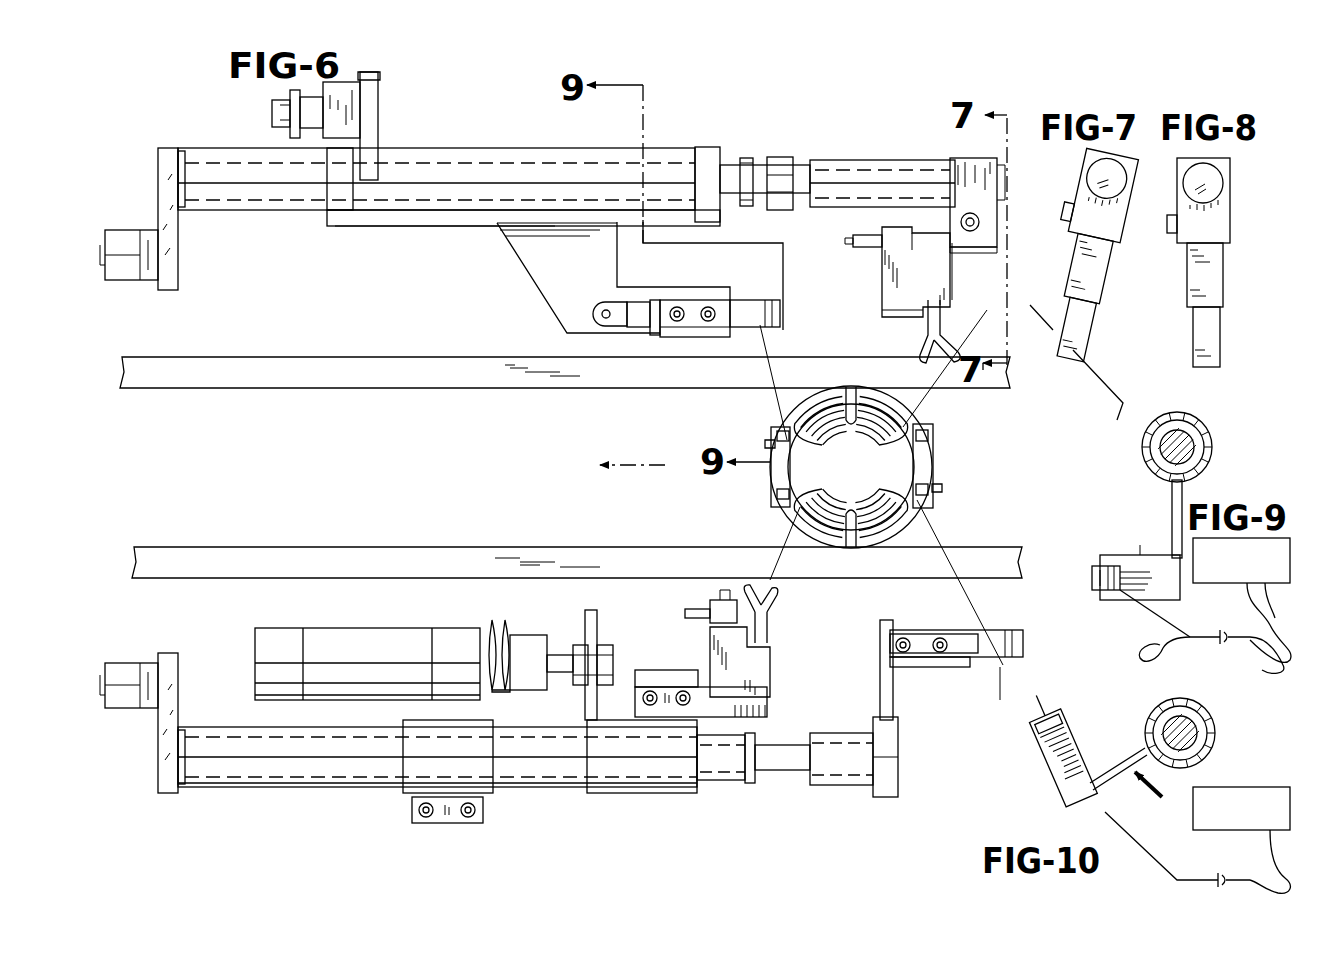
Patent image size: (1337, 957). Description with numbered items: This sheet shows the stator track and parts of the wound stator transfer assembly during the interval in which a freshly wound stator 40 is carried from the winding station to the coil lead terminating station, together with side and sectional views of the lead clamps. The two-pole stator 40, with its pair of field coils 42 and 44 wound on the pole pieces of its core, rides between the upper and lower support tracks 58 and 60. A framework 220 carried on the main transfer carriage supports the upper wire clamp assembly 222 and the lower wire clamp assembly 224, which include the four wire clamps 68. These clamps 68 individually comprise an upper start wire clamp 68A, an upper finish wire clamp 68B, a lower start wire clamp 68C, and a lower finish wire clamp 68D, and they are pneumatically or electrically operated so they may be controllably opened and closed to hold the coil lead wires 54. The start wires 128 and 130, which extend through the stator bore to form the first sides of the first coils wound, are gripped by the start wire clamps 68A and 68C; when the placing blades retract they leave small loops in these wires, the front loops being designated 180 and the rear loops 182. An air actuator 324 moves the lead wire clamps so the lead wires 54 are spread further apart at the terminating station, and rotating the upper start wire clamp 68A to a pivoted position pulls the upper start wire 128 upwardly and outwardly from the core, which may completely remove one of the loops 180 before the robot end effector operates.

In FIG. 6, the two-pole stator 40 is at (857, 456).
In FIG. 6, the field coil 42 is at (878, 395).
In FIG. 9, the field coil 42 is at (1247, 590).
In FIG. 10, the field coil 42 is at (1232, 830).
In FIG. 6, the field coil 44 is at (887, 502).
In FIG. 6, the coil lead wires 54 is at (922, 394).
In FIG. 7, the coil lead wires 54 is at (1097, 386).
In FIG. 6, the upper support track 58 is at (343, 357).
In FIG. 6, the lower support track 60 is at (349, 547).
In FIG. 6, the wire clamps 68 is at (865, 305).
In FIG. 6, the upper start wire clamp 68A is at (745, 305).
In FIG. 9, the upper start wire clamp 68A is at (1092, 567).
In FIG. 10, the upper start wire clamp 68A is at (1040, 727).
In FIG. 6, the upper finish wire clamp 68B is at (924, 325).
In FIG. 7, the upper finish wire clamp 68B is at (1082, 325).
In FIG. 8, the upper finish wire clamp 68B is at (1193, 342).
In FIG. 6, the lower start wire clamp 68C is at (978, 630).
In FIG. 6, the lower finish wire clamp 68D is at (774, 606).
In FIG. 6, the upper start wire 128 is at (766, 388).
In FIG. 9, the upper start wire 128 is at (1137, 612).
In FIG. 10, the upper start wire 128 is at (1105, 812).
In FIG. 6, the lower start wire 130 is at (966, 558).
In FIG. 9, the front start wire loops 180 is at (1158, 651).
In FIG. 6, the rear start wire loops 182 is at (768, 444).
In FIG. 9, the rear start wire loops 182 is at (1262, 671).
In FIG. 10, the rear start wire loops 182 is at (1185, 890).
In FIG. 6, the framework 220 is at (178, 150).
In FIG. 6, the upper wire clamp assembly 222 is at (490, 140).
In FIG. 6, the lower wire clamp assembly 224 is at (538, 792).
In FIG. 6, the air actuator 324 is at (357, 640).